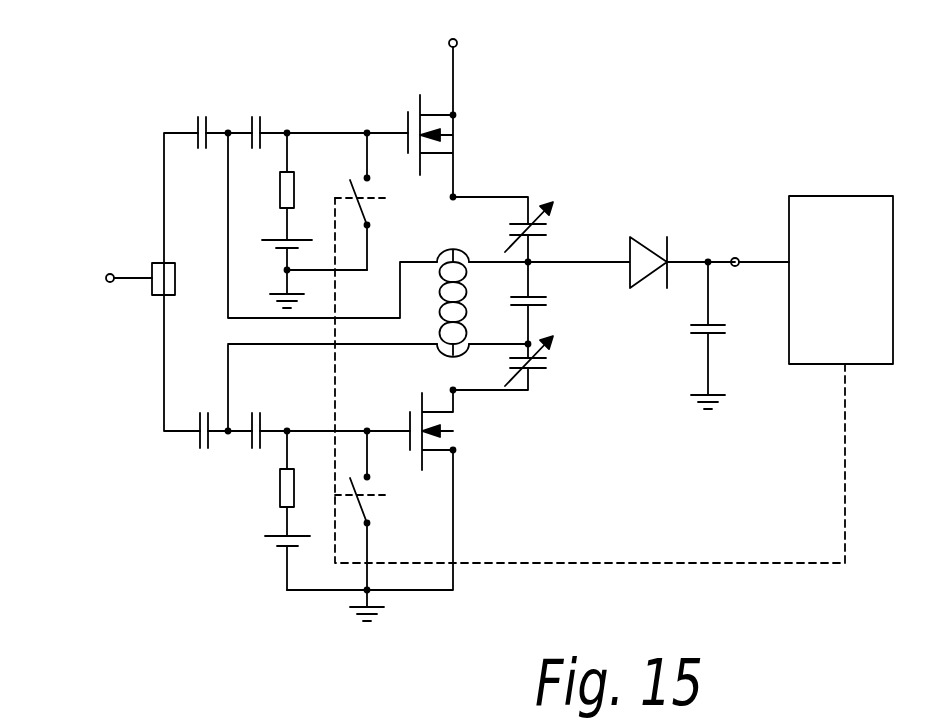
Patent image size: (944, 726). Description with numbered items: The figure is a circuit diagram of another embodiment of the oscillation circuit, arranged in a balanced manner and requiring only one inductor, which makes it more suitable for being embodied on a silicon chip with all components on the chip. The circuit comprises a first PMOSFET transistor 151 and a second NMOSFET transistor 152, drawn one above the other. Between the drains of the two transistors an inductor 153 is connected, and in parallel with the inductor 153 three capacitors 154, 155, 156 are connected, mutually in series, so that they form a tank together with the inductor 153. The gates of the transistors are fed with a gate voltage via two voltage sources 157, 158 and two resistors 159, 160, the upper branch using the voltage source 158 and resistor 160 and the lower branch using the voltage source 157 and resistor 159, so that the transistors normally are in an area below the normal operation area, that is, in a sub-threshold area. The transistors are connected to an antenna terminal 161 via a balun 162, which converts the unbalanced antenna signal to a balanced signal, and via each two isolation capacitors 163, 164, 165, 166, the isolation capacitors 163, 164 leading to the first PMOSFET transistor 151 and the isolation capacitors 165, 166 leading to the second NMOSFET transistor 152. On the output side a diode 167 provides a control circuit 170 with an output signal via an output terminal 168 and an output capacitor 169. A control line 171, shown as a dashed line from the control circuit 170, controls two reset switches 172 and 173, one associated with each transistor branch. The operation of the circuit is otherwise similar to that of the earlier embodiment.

The first PMOSFET transistor 151 is at (408, 121).
The second NMOSFET transistor 152 is at (410, 426).
The inductor 153 is at (468, 316).
The capacitor 154 is at (536, 206).
The capacitor 155 is at (540, 371).
The capacitor 156 is at (538, 291).
The voltage source 157 is at (265, 533).
The voltage source 158 is at (282, 250).
The resistor 159 is at (280, 481).
The resistor 160 is at (280, 192).
The antenna terminal 161 is at (110, 270).
The balun 162 is at (151, 290).
The isolation capacitor 163 is at (207, 116).
The isolation capacitor 164 is at (274, 86).
The isolation capacitor 165 is at (208, 412).
The isolation capacitor 166 is at (265, 412).
The diode 167 is at (643, 242).
The output terminal 168 is at (738, 256).
The output capacitor 169 is at (697, 324).
The control circuit 170 is at (843, 195).
The control line 171 is at (645, 562).
The reset switch 172 is at (368, 506).
The reset switch 173 is at (362, 205).